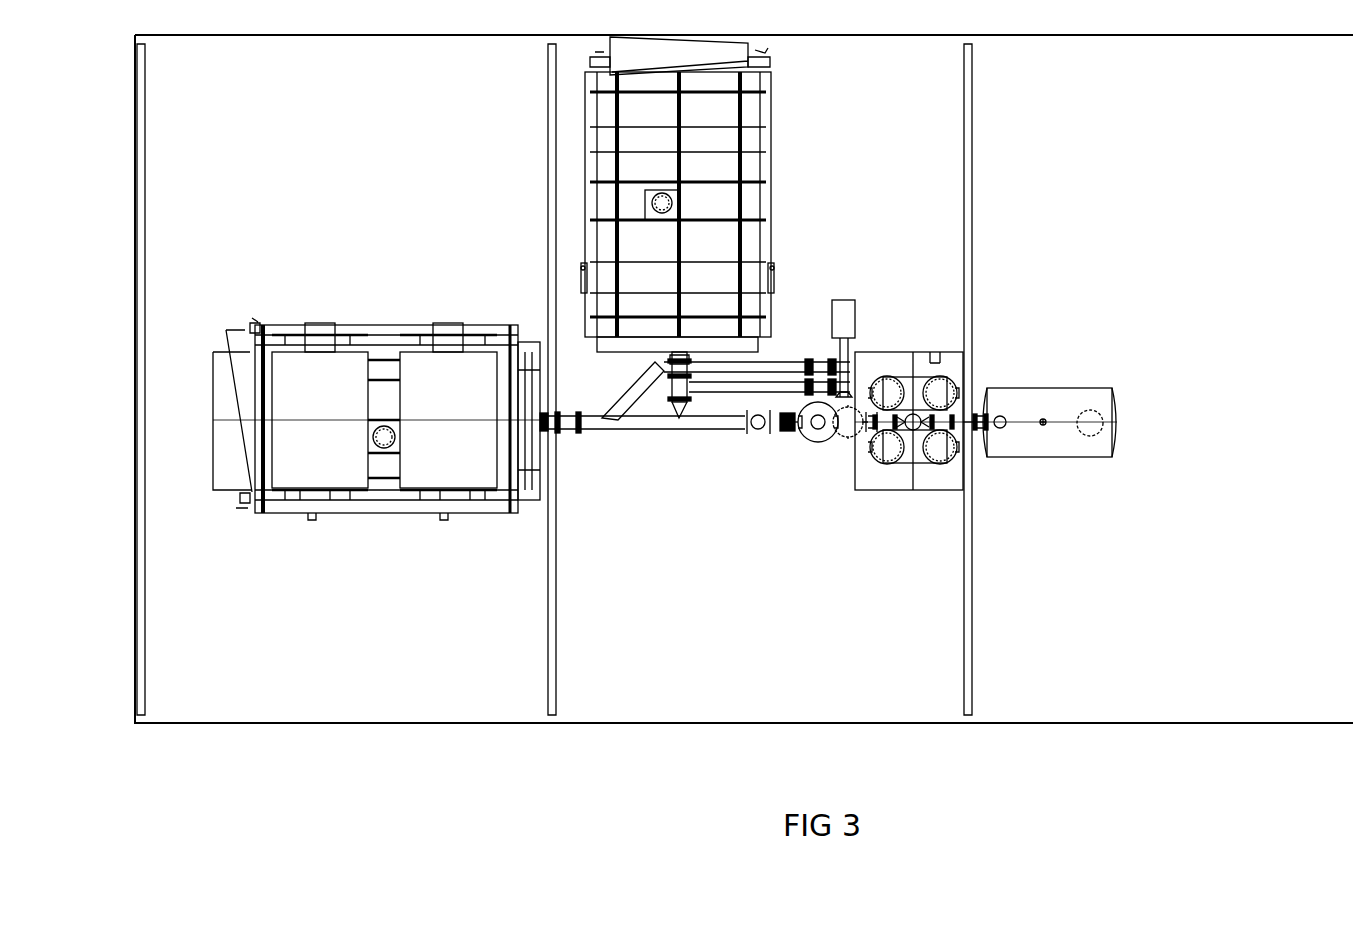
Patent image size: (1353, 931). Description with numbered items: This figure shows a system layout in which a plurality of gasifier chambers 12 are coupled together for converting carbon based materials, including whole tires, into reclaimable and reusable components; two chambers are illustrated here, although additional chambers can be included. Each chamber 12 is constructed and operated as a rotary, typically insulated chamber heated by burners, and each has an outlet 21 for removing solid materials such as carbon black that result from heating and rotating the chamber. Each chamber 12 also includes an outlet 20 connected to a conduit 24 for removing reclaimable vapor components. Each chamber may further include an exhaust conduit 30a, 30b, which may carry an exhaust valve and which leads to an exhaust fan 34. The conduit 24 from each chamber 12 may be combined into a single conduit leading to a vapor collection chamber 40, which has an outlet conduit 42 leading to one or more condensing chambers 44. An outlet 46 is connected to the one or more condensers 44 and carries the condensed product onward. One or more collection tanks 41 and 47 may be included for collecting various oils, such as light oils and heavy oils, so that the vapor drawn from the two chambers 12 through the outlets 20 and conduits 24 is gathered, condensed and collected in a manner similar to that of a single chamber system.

The gasifier chamber 12 is at (440, 388).
The outlet 21 is at (600, 55).
The outlet 20 is at (546, 430).
The conduit 24 is at (650, 432).
The exhaust conduit 30a is at (622, 396).
The exhaust conduit 30b is at (765, 388).
The exhaust fan 34 is at (845, 318).
The vapor collection chamber 40 is at (812, 445).
The collection tank 41 is at (930, 362).
The outlet conduit 42 is at (852, 440).
The condensing chambers 44 is at (913, 420).
The outlet 46 is at (976, 431).
The collection tank 47 is at (1050, 402).